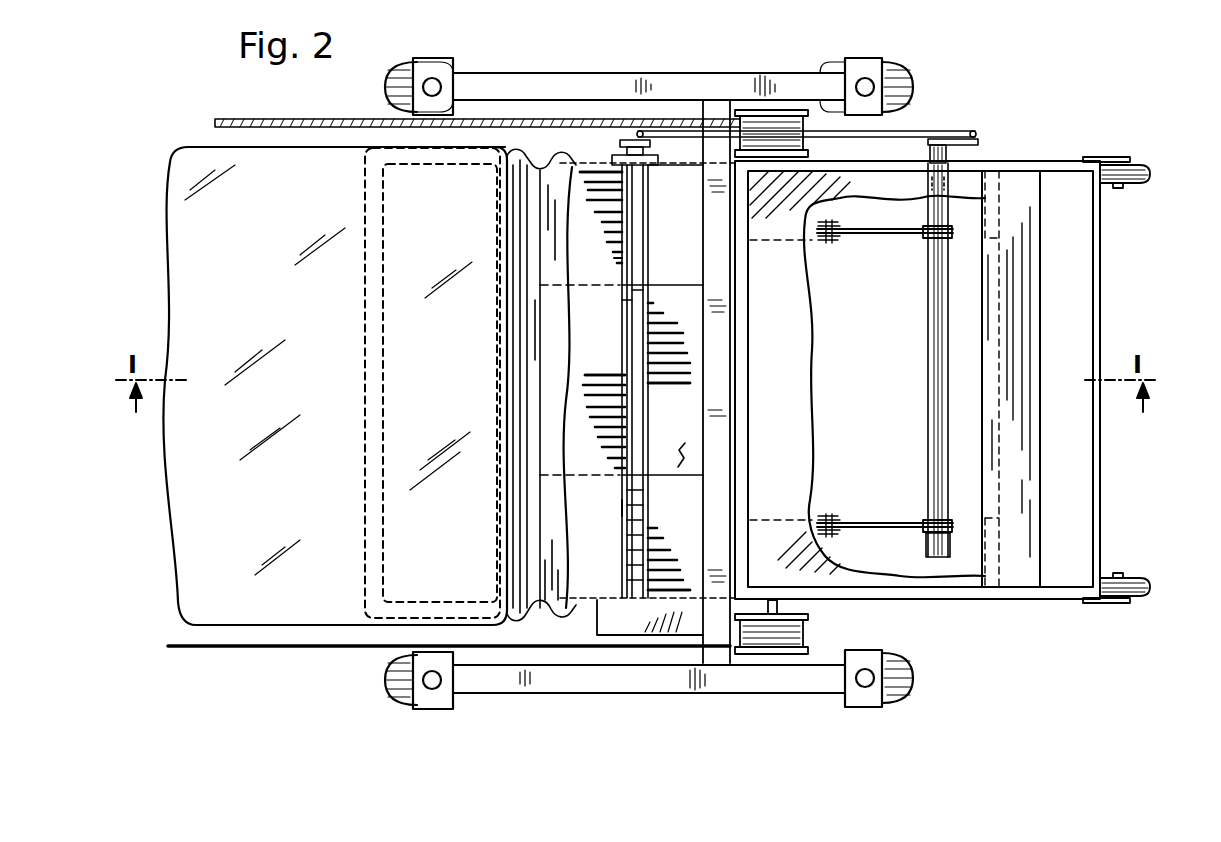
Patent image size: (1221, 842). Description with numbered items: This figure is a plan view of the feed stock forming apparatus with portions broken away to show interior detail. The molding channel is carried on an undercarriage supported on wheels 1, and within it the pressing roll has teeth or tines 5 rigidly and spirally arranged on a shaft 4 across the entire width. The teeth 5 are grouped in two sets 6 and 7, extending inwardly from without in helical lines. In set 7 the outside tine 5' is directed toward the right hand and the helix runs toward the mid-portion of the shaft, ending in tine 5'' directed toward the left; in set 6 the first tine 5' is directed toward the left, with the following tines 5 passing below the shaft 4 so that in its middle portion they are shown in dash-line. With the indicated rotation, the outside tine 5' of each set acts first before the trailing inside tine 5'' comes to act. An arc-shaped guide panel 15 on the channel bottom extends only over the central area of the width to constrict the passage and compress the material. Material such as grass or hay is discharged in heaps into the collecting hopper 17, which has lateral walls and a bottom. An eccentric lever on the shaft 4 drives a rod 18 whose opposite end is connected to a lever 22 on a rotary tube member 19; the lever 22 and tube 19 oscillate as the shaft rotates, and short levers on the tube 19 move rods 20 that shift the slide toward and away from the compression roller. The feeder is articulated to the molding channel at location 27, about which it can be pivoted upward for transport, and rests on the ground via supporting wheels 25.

The wheels 1 is at (450, 68).
The shaft 4 is at (637, 380).
The teeth or tines 5 is at (630, 381).
The outside tine 5' is at (639, 361).
The inside tine 5'' is at (626, 384).
The set of tines 6 is at (606, 263).
The set of tines 7 is at (612, 508).
The guide panel 15 is at (663, 472).
The collecting hopper 17 is at (975, 606).
The rod 18 is at (920, 131).
The rotary tube member 19 is at (925, 318).
The rods 20 is at (898, 235).
The lever 22 is at (972, 145).
The supporting wheels 25 is at (1150, 168).
The articulated location 27 is at (740, 157).